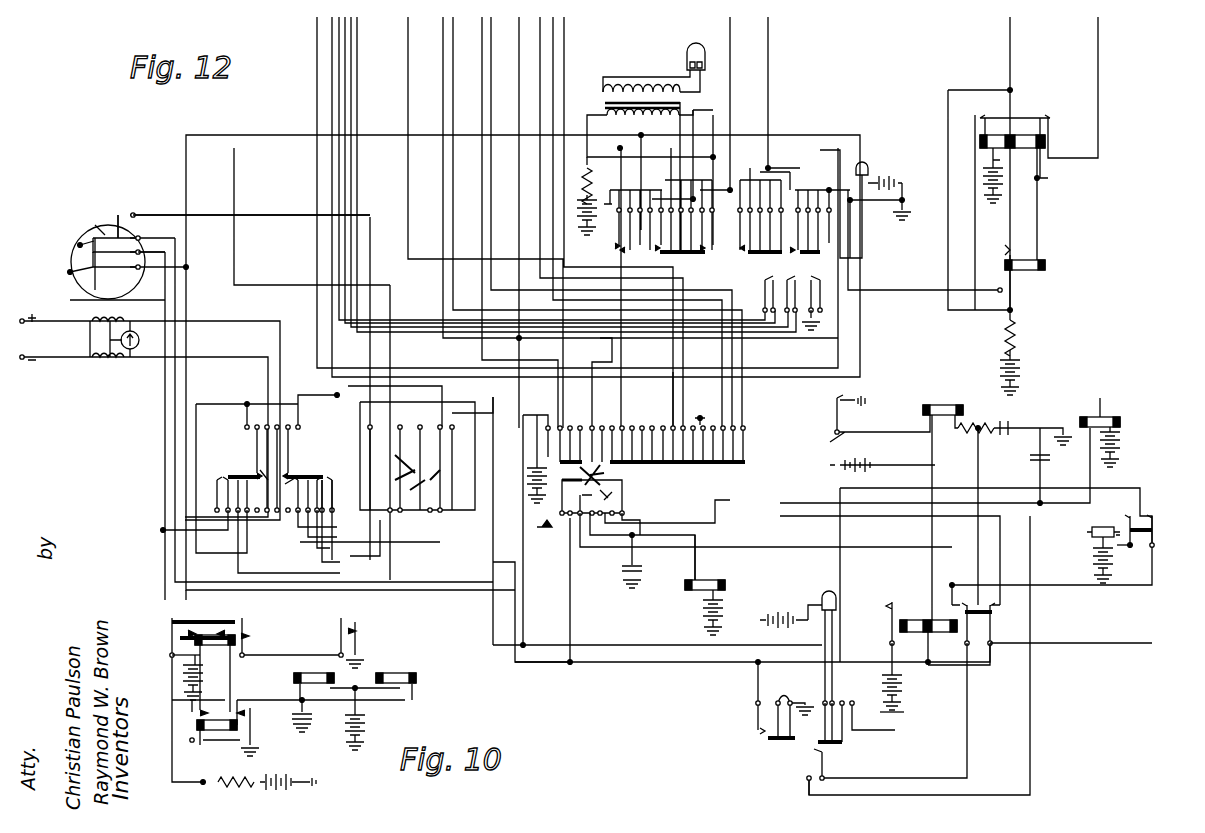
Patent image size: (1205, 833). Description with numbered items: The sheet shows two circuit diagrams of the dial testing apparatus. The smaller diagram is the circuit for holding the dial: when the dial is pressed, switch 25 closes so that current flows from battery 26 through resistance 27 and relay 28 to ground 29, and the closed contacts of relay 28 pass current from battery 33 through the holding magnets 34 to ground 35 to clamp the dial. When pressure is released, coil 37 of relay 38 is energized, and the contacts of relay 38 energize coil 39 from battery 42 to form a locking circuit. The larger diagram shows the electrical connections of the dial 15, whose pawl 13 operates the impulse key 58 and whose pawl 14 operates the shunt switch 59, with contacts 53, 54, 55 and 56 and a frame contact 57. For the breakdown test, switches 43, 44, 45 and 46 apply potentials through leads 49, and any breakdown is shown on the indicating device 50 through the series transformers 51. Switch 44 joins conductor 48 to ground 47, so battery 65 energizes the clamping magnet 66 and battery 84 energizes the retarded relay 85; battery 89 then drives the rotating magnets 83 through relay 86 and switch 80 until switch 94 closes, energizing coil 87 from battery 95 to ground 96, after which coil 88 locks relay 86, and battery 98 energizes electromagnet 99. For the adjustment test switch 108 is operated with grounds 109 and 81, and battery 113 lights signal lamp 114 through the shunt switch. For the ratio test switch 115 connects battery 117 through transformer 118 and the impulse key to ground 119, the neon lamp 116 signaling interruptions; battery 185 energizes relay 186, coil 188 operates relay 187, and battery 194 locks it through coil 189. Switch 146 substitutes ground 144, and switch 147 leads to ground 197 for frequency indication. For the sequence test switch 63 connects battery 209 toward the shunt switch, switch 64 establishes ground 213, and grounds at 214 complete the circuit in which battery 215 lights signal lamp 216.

In FIG. 12, the pawl 13 is at (70, 272).
In FIG. 12, the pawl 14 is at (80, 245).
In FIG. 12, the dial 15 is at (105, 228).
In FIG. 10, the switch 25 is at (355, 640).
In FIG. 10, the battery 26 is at (295, 780).
In FIG. 10, the resistance 27 is at (205, 785).
In FIG. 10, the relay 28 is at (193, 740).
In FIG. 10, the ground 29 is at (357, 658).
In FIG. 10, the battery 33 is at (362, 723).
In FIG. 10, the holding magnets 34 is at (400, 680).
In FIG. 10, the ground 35 is at (252, 747).
In FIG. 10, the coil 37 is at (243, 648).
In FIG. 10, the relay 38 is at (185, 653).
In FIG. 10, the coil 39 is at (180, 640).
In FIG. 10, the battery 42 is at (190, 680).
In FIG. 12, the switch 43 is at (275, 470).
In FIG. 12, the switch 44 is at (280, 477).
In FIG. 12, the switch 45 is at (410, 465).
In FIG. 12, the switch 46 is at (410, 492).
In FIG. 12, the ground 47 is at (325, 548).
In FIG. 12, the conductor 48 is at (515, 593).
In FIG. 12, the leads 49 is at (72, 355).
In FIG. 12, the indicating device 50 is at (132, 350).
In FIG. 12, the series transformers 51 is at (95, 358).
In FIG. 12, the contact 53 is at (165, 300).
In FIG. 12, the contact 54 is at (165, 256).
In FIG. 12, the contact 55 is at (146, 245).
In FIG. 12, the contact 56 is at (118, 215).
In FIG. 12, the frame contact 57 is at (133, 215).
In FIG. 12, the impulse key 58 is at (93, 250).
In FIG. 12, the shunt switch 59 is at (80, 245).
In FIG. 12, the switch 63 is at (596, 472).
In FIG. 12, the switch 64 is at (606, 500).
In FIG. 12, the battery 65 is at (1110, 453).
In FIG. 12, the clamping magnet 66 is at (1100, 416).
In FIG. 12, the switch 80 is at (822, 757).
In FIG. 12, the ground 81 is at (895, 712).
In FIG. 12, the rotating magnets 83 is at (932, 406).
In FIG. 12, the battery 84 is at (1085, 560).
In FIG. 12, the retarded relay 85 is at (1090, 533).
In FIG. 12, the relay 86 is at (895, 634).
In FIG. 12, the coil 87 is at (950, 643).
In FIG. 12, the coil 88 is at (955, 607).
In FIG. 12, the battery 89 is at (855, 459).
In FIG. 12, the switch 94 is at (812, 415).
In FIG. 12, the battery 95 is at (897, 696).
In FIG. 12, the ground 96 is at (845, 400).
In FIG. 12, the battery 98 is at (718, 614).
In FIG. 12, the electromagnet 99 is at (715, 583).
In FIG. 12, the switch 108 is at (785, 745).
In FIG. 12, the ground 109 is at (775, 705).
In FIG. 12, the battery 113 is at (777, 612).
In FIG. 12, the signal lamp 114 is at (828, 603).
In FIG. 12, the switch 115 is at (658, 258).
In FIG. 12, the lamp 116 is at (692, 52).
In FIG. 12, the battery 117 is at (600, 245).
In FIG. 12, the transformer 118 is at (682, 117).
In FIG. 12, the ground 119 is at (603, 202).
In FIG. 12, the ground 144 is at (902, 215).
In FIG. 12, the switch 146 is at (782, 260).
In FIG. 12, the switch 147 is at (800, 277).
In FIG. 12, the battery 185 is at (1020, 369).
In FIG. 12, the relay 186 is at (1042, 263).
In FIG. 12, the relay 187 is at (1007, 132).
In FIG. 12, the coil 188 is at (1023, 134).
In FIG. 12, the coil 189 is at (1005, 112).
In FIG. 12, the battery 194 is at (1003, 178).
In FIG. 12, the ground 197 is at (815, 322).
In FIG. 12, the battery 209 is at (535, 463).
In FIG. 12, the ground 213 is at (547, 535).
In FIG. 12, the ground 214 is at (701, 420).
In FIG. 12, the battery 215 is at (887, 179).
In FIG. 12, the signal lamp 216 is at (861, 168).